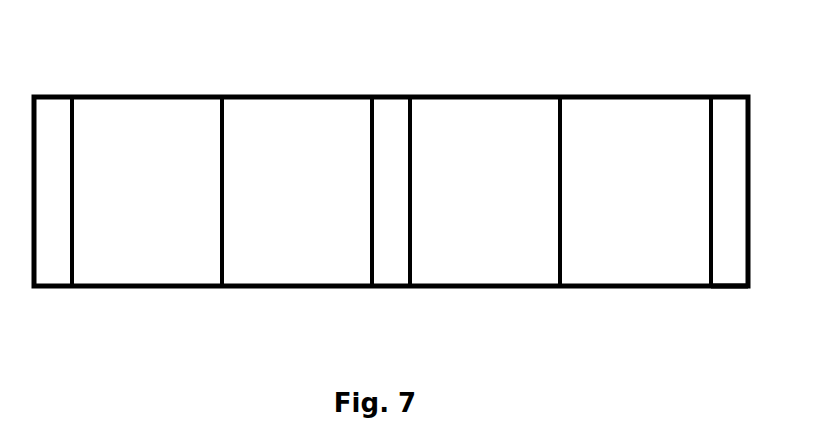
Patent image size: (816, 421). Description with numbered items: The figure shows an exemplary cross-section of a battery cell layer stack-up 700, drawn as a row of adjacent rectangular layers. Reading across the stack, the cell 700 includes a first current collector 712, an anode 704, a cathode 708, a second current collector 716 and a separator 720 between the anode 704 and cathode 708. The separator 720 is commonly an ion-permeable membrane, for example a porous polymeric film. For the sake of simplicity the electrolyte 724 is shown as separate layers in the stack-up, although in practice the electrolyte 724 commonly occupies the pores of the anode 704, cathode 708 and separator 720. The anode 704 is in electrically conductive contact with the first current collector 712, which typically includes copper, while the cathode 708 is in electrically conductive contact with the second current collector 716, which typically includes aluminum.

The battery cell layer stack-up 700 is at (656, 60).
The anode 704 is at (148, 288).
The cathode 708 is at (636, 288).
The first current collector 712 is at (53, 288).
The second current collector 716 is at (728, 288).
The separator 720 is at (392, 288).
The electrolyte 724 is at (298, 288).